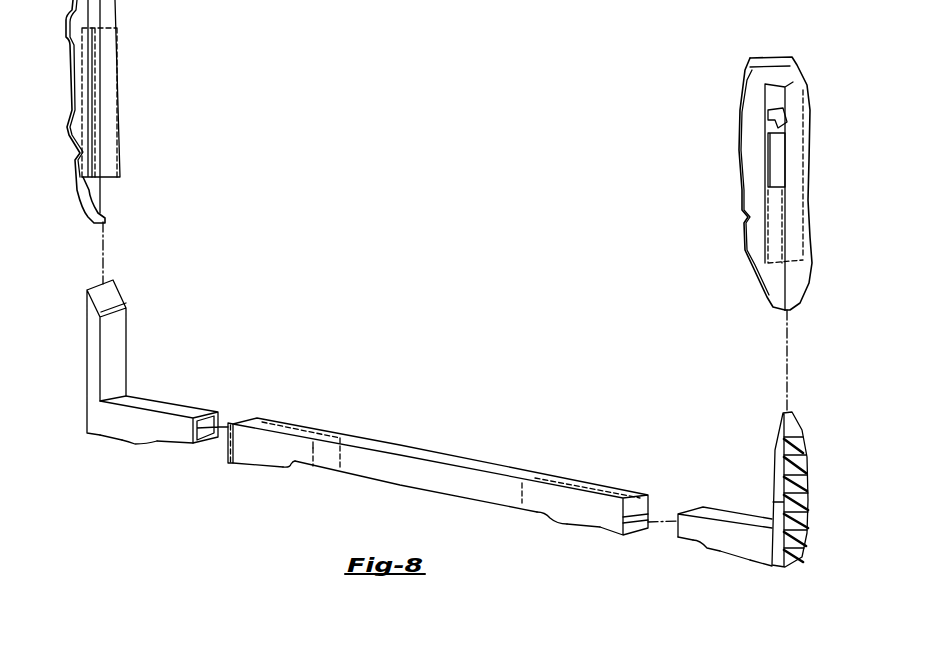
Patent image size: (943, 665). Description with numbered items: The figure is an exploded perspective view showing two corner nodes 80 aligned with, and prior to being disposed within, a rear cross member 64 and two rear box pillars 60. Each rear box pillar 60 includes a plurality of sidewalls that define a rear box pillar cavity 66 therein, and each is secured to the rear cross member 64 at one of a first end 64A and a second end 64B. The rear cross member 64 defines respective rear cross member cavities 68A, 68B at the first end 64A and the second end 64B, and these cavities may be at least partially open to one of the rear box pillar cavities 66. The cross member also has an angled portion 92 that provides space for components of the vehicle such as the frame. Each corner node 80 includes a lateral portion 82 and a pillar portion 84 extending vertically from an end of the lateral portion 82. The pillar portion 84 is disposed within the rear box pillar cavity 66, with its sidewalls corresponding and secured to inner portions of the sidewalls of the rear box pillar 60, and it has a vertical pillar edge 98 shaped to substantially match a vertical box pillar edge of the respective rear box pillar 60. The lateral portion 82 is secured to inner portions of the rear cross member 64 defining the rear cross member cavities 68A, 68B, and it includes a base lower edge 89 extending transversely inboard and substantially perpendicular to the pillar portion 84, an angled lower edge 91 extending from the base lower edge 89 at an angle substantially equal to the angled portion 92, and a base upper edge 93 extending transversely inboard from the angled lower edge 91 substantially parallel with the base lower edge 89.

The rear box pillar 60 is at (432, 206).
The rear box pillar cavity 66 is at (107, 70).
The corner node 80 is at (441, 456).
The pillar portion 84 is at (447, 423).
The vertical pillar edge 98 is at (778, 500).
The lateral portion 82 is at (420, 514).
The base lower edge 89 is at (110, 438).
The angled lower edge 91 is at (158, 443).
The base upper edge 93 is at (177, 445).
The rear cross member 64 is at (440, 474).
The first end 64A is at (298, 423).
The second end 64B is at (592, 533).
The angled portion 92 is at (287, 470).
The rear cross member cavity 68A is at (225, 404).
The rear cross member cavity 68B is at (640, 540).